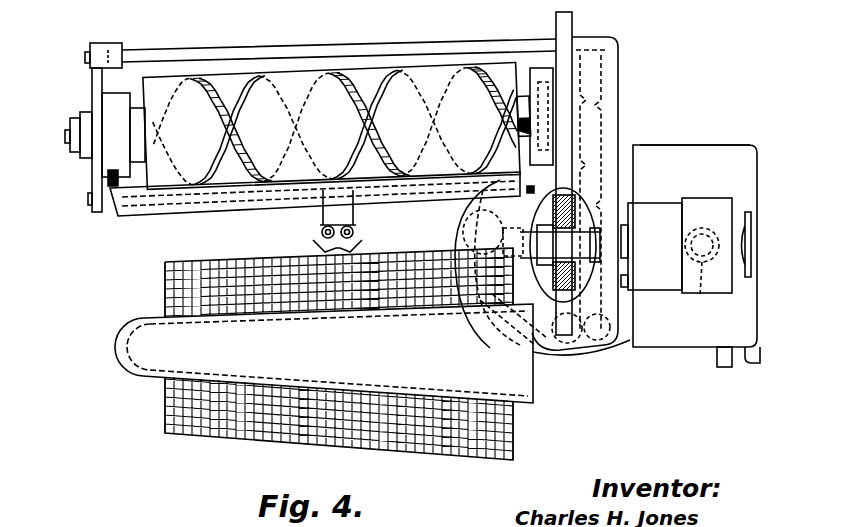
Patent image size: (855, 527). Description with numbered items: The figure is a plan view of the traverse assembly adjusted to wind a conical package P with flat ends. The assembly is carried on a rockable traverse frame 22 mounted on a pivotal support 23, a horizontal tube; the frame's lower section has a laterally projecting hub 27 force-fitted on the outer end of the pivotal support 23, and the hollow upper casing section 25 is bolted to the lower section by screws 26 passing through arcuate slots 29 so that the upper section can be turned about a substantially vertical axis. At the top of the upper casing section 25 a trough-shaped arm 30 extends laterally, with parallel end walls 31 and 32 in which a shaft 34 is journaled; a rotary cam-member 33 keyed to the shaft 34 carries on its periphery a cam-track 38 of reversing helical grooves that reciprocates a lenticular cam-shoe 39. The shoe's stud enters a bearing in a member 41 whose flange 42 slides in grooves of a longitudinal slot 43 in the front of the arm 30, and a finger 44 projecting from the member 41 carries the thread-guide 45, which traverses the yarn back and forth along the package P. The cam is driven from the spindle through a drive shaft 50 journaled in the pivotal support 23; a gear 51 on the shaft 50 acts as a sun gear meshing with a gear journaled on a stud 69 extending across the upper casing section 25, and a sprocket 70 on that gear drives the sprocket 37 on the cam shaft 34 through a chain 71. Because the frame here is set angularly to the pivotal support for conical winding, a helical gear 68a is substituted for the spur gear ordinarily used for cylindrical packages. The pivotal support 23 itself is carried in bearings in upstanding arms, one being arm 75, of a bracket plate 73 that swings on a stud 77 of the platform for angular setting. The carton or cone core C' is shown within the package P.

The rockable frame 22 is at (620, 48).
The pivotal support 23 is at (747, 232).
The upper casing section 25 is at (598, 42).
The screws 26 is at (589, 345).
The hub 27 is at (675, 203).
The arcuate slots 29 is at (605, 340).
The arm 30 is at (372, 47).
The end wall 31 is at (98, 88).
The end wall 32 is at (560, 60).
The rotary cam-member 33 is at (297, 80).
The shaft 34 is at (520, 128).
The sprocket 37 is at (600, 68).
The cam-track 38 is at (240, 95).
The cam-shoe 39 is at (340, 170).
The member 41 is at (322, 226).
The flange 42 is at (356, 205).
The longitudinal slot 43 is at (419, 198).
The finger 44 is at (358, 233).
The thread-guide 45 is at (318, 254).
The drive shaft 50 is at (750, 274).
The gear 51 is at (550, 290).
The helical gear 68a is at (563, 297).
The stud 69 is at (628, 238).
The sprocket 70 is at (623, 282).
The chain 71 is at (606, 194).
The bracket 73 is at (709, 152).
The arm 75 is at (702, 207).
The stud 77 is at (702, 295).
The carton C' is at (324, 353).
The package P is at (165, 410).